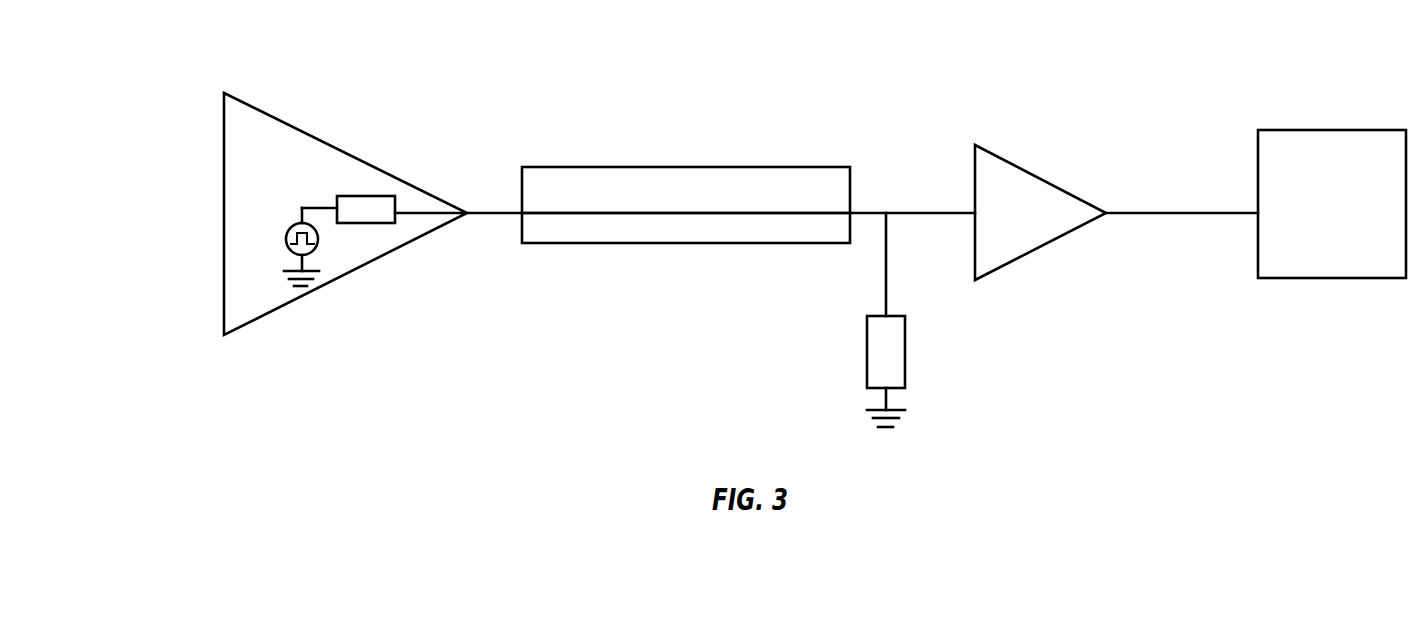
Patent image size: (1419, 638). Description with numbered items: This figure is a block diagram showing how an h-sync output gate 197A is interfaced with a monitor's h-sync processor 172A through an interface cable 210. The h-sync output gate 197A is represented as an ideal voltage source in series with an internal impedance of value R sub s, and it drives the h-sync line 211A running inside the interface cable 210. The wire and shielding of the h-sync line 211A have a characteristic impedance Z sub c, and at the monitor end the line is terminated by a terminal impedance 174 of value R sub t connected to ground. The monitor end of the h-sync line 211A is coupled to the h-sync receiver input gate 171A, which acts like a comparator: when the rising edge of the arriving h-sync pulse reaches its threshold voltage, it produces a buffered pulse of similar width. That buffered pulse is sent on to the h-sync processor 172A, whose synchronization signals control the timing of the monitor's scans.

The h-sync output gate 197A is at (345, 214).
The interface cable 210 is at (686, 228).
The h-sync line 211A is at (686, 162).
The terminal impedance 174 is at (932, 320).
The h-sync receiver input gate 171A is at (1042, 242).
The h-sync processor 172A is at (1395, 253).